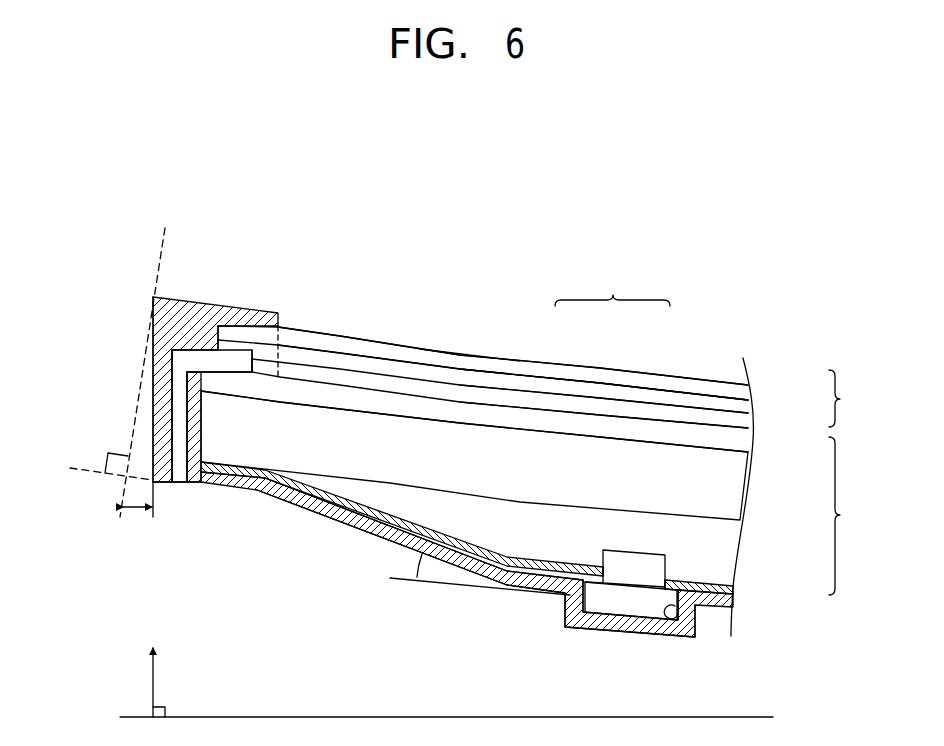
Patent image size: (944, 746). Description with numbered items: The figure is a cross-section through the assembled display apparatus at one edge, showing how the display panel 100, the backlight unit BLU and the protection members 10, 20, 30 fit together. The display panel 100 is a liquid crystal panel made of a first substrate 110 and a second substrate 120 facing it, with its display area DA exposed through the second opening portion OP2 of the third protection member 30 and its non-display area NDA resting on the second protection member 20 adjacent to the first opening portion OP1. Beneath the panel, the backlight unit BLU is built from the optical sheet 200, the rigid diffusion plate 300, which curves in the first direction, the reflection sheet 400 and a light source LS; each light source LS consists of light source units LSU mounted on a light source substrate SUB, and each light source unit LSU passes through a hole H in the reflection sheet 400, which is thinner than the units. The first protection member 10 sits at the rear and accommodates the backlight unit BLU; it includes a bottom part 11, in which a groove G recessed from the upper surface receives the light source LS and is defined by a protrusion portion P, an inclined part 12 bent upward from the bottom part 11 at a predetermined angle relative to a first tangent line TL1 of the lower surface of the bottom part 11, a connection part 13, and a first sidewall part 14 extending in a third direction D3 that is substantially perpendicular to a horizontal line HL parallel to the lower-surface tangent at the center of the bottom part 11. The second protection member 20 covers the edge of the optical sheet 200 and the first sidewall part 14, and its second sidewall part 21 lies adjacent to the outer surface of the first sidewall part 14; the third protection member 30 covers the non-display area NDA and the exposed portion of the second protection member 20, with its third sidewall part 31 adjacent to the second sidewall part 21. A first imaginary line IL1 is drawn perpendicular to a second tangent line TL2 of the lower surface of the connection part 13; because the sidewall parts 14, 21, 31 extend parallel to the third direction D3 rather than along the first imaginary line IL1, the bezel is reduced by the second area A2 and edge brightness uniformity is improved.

The third protection member 30 is at (180, 313).
The third sidewall part 31 is at (158, 364).
The second protection member 20 is at (198, 362).
The second sidewall part 21 is at (176, 391).
The first sidewall part 14 is at (193, 421).
The connection part 13 is at (230, 484).
The inclined part 12 is at (303, 508).
The bottom part 11 is at (537, 594).
The first protection member 10 is at (716, 602).
The display panel 100 is at (531, 377).
The second substrate 120 is at (740, 390).
The first substrate 110 is at (740, 407).
The optical sheet 200 is at (738, 442).
The diffusion plate 300 is at (736, 488).
The reflection sheet 400 is at (733, 584).
The backlight unit BLU is at (852, 516).
The light source LS is at (612, 289).
The light source substrate SUB is at (595, 581).
The light source unit LSU is at (628, 560).
The hole H is at (662, 583).
The protrusion portion P is at (647, 628).
The groove G is at (676, 619).
The display area DA is at (449, 359).
The non-display area NDA is at (243, 333).
The first opening portion OP1 is at (256, 372).
The second opening portion OP2 is at (284, 316).
The first imaginary line IL1 is at (149, 363).
The first tangent line TL1 is at (461, 580).
The second tangent line TL2 is at (91, 466).
The second area A2 is at (138, 510).
The third direction D3 is at (170, 682).
The horizontal line HL is at (465, 718).